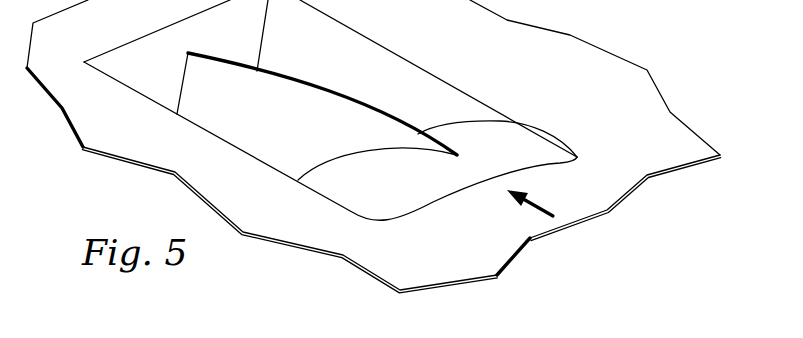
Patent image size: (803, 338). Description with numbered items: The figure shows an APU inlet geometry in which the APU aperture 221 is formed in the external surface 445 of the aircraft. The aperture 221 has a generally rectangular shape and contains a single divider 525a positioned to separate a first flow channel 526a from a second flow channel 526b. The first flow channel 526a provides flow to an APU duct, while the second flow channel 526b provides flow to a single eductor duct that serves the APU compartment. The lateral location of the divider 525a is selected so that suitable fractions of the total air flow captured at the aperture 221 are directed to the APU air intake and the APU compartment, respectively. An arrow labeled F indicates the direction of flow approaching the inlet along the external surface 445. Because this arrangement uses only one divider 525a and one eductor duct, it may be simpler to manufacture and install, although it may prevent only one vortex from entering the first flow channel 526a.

The APU aperture 221 is at (482, 203).
The external surface 445 is at (597, 182).
The divider 525a is at (320, 112).
The second flow channel 526b is at (434, 101).
The first flow channel 526a is at (347, 178).
The force direction arrow F is at (540, 204).